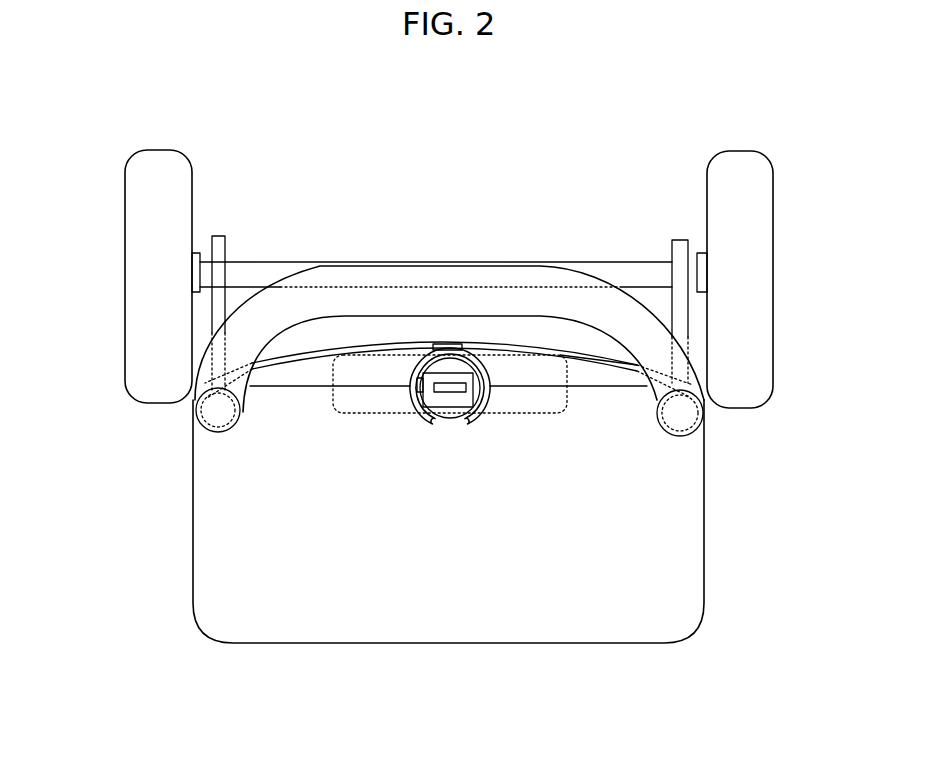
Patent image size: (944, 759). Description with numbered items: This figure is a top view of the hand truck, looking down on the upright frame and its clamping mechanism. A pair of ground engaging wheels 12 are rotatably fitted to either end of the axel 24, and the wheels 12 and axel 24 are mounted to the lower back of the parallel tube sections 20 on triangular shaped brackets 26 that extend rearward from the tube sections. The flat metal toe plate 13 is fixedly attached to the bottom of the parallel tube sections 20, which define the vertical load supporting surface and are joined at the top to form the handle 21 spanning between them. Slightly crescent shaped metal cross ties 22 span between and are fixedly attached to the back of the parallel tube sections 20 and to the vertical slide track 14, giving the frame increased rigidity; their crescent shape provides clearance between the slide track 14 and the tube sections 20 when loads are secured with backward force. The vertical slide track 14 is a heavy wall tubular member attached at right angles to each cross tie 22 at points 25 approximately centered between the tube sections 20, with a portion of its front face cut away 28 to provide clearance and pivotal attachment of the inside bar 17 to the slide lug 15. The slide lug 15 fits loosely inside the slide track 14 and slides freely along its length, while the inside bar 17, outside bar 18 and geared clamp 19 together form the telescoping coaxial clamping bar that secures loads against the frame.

The wheels 12 is at (152, 183).
The toe plate 13 is at (423, 643).
The vertical slide track 14 is at (497, 390).
The slide lug 15 is at (437, 408).
The inside bar 17 is at (443, 390).
The outside bar 18 is at (432, 398).
The geared clamp 19 is at (333, 413).
The parallel tube sections 20 is at (216, 432).
The handle 21 is at (513, 280).
The cross ties 22 is at (598, 362).
The axel 24 is at (262, 268).
The points 25 is at (463, 350).
The triangular shaped brackets 26 is at (218, 242).
The cut away 28 is at (448, 422).